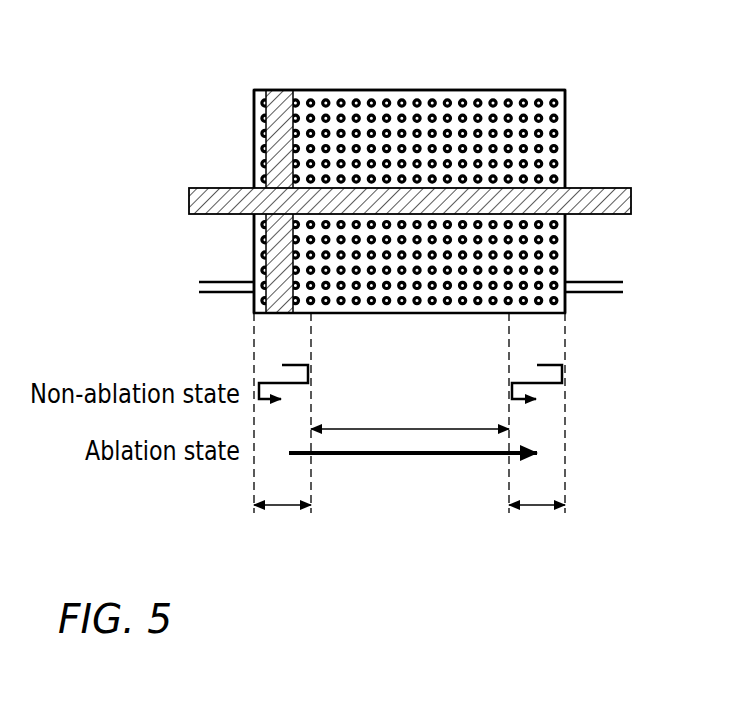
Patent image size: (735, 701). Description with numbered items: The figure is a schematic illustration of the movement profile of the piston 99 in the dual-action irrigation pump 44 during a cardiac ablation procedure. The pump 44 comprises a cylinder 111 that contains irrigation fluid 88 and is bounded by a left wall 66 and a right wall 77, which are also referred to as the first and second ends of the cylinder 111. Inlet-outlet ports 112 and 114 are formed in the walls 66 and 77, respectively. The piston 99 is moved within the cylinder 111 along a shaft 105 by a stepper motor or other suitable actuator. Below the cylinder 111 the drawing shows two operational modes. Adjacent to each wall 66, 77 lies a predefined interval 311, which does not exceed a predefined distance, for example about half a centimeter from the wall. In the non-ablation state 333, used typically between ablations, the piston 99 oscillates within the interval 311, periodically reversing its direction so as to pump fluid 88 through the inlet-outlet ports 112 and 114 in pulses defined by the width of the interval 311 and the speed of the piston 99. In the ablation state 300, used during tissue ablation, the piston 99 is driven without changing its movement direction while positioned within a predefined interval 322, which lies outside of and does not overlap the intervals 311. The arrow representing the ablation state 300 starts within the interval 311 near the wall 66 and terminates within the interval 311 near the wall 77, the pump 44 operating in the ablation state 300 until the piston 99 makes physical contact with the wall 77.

The pump 44 is at (590, 76).
The left wall 66 is at (254, 121).
The right wall 77 is at (565, 167).
The irrigation fluid 88 is at (527, 127).
The piston 99 is at (280, 90).
The shaft 105 is at (189, 205).
The cylinder 111 is at (482, 89).
The inlet-outlet port 112 is at (196, 287).
The inlet-outlet port 114 is at (629, 287).
The ablation state 300 is at (414, 466).
The predefined interval 311 is at (280, 506).
The predefined interval 322 is at (413, 429).
The non-ablation state 333 is at (313, 376).